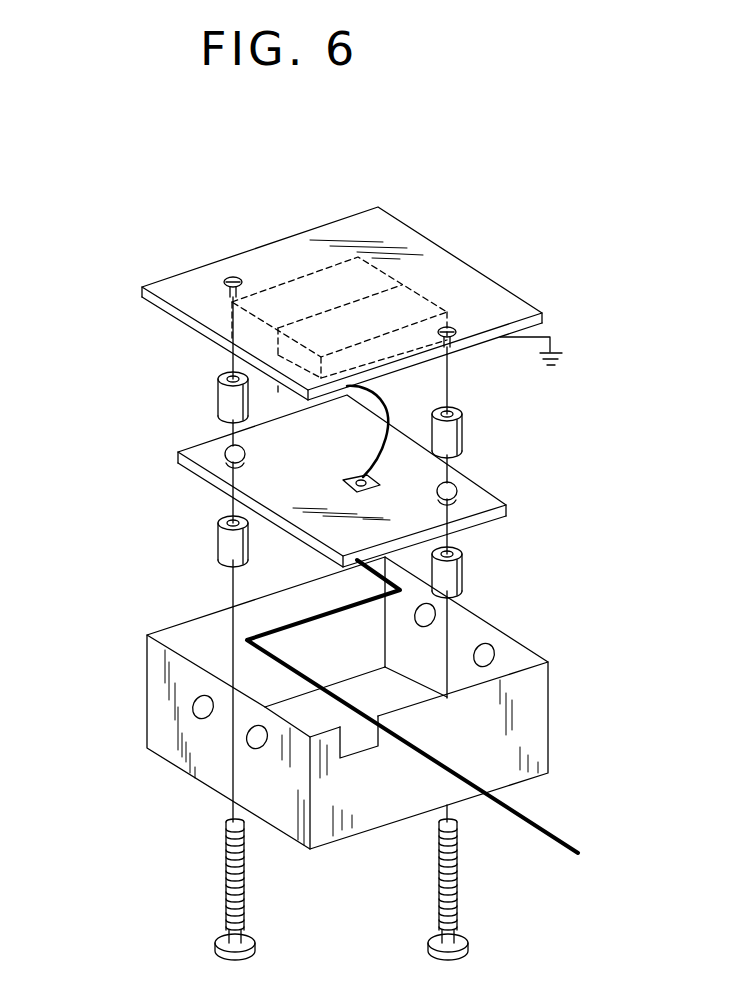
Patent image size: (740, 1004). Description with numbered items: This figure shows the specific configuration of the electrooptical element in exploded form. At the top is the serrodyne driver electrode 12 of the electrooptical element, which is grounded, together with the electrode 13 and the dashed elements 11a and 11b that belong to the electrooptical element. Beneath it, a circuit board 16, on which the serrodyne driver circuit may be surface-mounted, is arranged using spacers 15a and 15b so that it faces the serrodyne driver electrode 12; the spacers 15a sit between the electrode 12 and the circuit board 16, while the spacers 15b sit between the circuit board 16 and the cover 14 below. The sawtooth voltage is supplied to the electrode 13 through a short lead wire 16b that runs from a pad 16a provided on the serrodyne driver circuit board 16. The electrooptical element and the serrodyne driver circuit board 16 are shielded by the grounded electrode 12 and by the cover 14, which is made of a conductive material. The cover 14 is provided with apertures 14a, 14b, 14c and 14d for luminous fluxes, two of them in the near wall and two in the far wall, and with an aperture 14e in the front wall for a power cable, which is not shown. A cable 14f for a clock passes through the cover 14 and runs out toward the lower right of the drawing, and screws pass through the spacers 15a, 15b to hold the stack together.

The antenna element 11a is at (232, 303).
The antenna element 11b is at (278, 390).
The serrodyne driver electrode 12 is at (207, 277).
The electrode 13 is at (232, 342).
The cover 14 is at (162, 678).
The aperture 14a is at (198, 708).
The aperture 14b is at (248, 738).
The aperture 14c is at (437, 623).
The aperture 14d is at (495, 656).
The aperture 14e is at (360, 756).
The cable 14f is at (540, 828).
The spacer 15a is at (217, 397).
The spacer 15b is at (218, 555).
The circuit board 16 is at (180, 466).
The pad 16a is at (350, 481).
The lead wire 16b is at (372, 443).